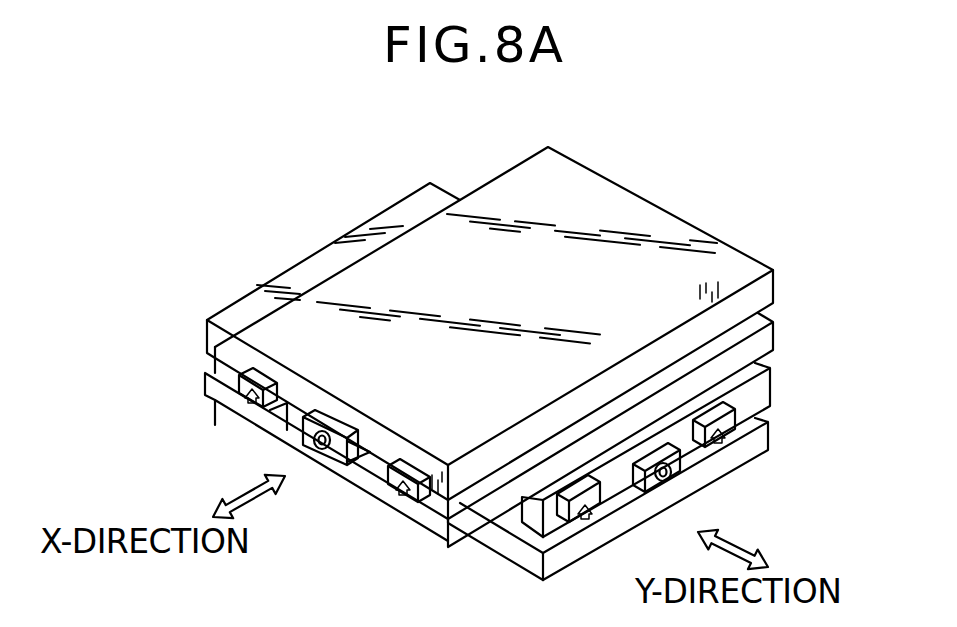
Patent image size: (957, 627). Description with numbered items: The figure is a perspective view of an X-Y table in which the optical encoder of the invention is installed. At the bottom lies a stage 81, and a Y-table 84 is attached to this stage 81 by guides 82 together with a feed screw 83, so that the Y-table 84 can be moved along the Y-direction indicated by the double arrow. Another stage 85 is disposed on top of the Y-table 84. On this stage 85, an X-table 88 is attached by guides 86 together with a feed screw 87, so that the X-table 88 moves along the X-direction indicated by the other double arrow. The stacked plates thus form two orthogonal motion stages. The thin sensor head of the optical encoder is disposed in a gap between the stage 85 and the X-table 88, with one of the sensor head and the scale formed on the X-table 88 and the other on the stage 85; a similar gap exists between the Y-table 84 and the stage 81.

The stage 81 is at (755, 440).
The guides 82 is at (713, 447).
The feed screw 83 is at (655, 490).
The Y-table 84 is at (755, 392).
The stage 85 is at (767, 338).
The guides 86 is at (270, 420).
The feed screw 87 is at (330, 462).
The X-table 88 is at (630, 202).